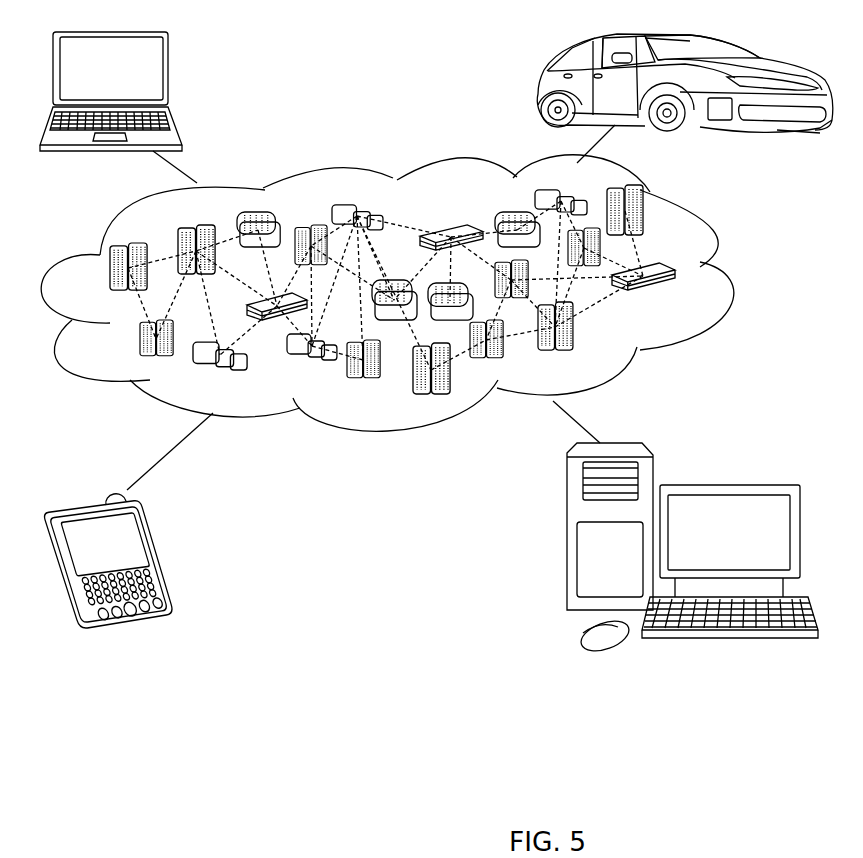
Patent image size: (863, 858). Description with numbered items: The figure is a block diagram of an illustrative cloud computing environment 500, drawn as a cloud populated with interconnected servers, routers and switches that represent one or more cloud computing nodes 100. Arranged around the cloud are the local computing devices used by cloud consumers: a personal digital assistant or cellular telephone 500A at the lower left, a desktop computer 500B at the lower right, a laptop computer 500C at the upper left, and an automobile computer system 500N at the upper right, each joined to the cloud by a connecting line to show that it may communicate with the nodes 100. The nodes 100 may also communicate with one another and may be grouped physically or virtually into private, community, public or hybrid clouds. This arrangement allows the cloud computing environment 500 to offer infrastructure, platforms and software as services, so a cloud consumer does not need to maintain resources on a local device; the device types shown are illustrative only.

The laptop computer 500C is at (170, 75).
The automobile computer system 500N is at (543, 88).
The cloud computing environment 500 is at (722, 277).
The cloud computing nodes 100 is at (679, 298).
The personal digital assistant (PDA) or cellular telephone 500A is at (162, 554).
The desktop computer 500B is at (727, 485).